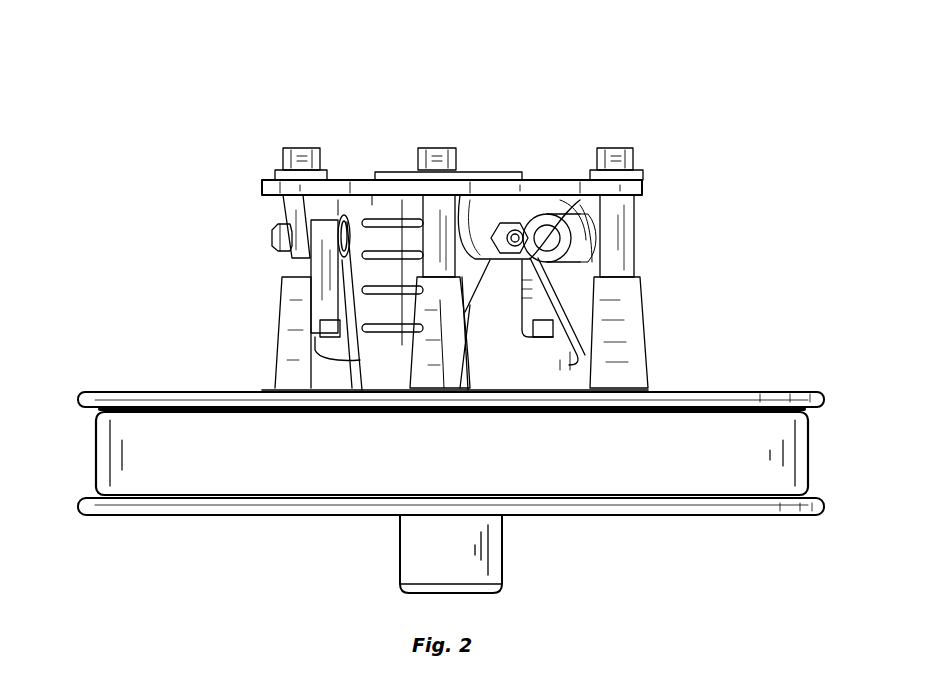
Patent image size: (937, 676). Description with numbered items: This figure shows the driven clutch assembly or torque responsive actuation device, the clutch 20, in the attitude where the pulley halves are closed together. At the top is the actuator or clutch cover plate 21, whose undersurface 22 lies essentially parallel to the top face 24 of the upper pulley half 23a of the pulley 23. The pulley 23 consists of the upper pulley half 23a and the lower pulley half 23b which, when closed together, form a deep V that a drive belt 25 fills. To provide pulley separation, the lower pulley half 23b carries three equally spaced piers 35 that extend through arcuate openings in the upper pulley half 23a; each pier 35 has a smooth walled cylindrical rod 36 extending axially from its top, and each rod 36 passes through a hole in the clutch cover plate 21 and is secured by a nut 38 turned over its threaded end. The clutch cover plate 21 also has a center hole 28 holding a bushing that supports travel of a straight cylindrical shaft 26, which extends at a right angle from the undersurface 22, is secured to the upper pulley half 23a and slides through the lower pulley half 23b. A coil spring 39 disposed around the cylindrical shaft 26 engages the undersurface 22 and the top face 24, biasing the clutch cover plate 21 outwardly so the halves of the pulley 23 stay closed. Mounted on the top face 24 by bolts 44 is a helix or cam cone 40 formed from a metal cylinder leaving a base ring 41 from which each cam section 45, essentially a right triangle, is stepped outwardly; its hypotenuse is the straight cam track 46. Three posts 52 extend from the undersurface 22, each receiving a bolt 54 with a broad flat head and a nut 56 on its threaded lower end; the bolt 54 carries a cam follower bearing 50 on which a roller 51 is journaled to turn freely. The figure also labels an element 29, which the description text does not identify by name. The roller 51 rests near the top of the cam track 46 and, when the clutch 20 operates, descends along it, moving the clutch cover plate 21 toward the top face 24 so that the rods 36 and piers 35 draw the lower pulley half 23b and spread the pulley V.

The clutch 20 is at (792, 290).
The clutch cover plate 21 is at (578, 200).
The undersurface 22 is at (289, 210).
The pulley 23 is at (88, 450).
The upper pulley half 23a is at (822, 414).
The lower pulley half 23b is at (822, 500).
The top face 24 is at (736, 390).
The drive belt 25 is at (814, 452).
The cylindrical shaft 26 is at (483, 541).
The center hole 28 is at (382, 200).
The center post 29 is at (512, 194).
The piers 35 is at (348, 300).
The rod 36 is at (350, 275).
The nut 38 is at (290, 150).
The coil spring 39 is at (420, 302).
The helix or cam cone 40 is at (515, 333).
The base ring 41 is at (645, 376).
The bolt 44 is at (330, 330).
The cam section 45 is at (509, 298).
The cam track 46 is at (494, 210).
The cam follower bearing 50 is at (545, 215).
The roller 51 is at (372, 193).
The post 52 is at (526, 225).
The bolt 54 is at (636, 256).
The nut 56 is at (268, 226).